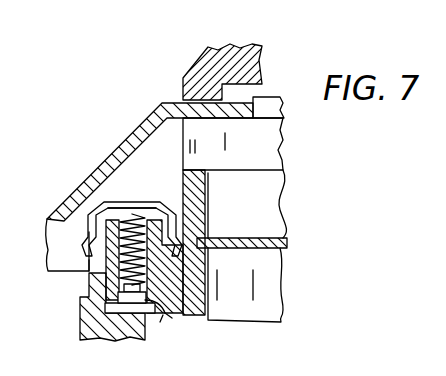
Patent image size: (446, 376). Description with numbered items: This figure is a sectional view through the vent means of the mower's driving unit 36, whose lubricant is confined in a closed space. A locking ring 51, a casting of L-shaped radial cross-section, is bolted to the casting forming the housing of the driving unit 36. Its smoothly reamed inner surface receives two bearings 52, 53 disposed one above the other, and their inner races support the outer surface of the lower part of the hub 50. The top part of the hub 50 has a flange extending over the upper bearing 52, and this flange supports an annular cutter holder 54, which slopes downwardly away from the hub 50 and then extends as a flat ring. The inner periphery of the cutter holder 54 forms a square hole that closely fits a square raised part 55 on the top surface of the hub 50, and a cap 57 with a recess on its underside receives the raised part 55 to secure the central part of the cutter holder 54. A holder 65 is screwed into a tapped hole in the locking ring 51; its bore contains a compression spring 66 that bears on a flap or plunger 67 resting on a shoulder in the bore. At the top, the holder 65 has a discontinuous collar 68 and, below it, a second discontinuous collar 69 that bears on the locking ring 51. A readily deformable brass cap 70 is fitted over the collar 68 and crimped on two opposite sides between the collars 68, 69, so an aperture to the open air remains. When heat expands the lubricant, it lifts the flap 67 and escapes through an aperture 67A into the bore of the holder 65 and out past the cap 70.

The driving unit 36 is at (93, 343).
The hub 50 is at (270, 146).
The locking ring 51 is at (206, 185).
The bearing 52 is at (281, 205).
The bearing 53 is at (268, 283).
The cutter holder 54 is at (137, 134).
The raised part 55 is at (279, 96).
The cap 57 is at (203, 66).
The holder 65 is at (73, 263).
The compression spring 66 is at (172, 204).
The flap or plunger 67 is at (172, 320).
The aperture 67A is at (160, 322).
The discontinuous collar 68 is at (172, 223).
The second discontinuous collar 69 is at (90, 270).
The cap 70 is at (123, 203).